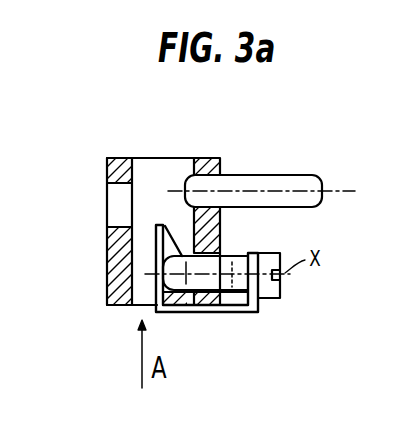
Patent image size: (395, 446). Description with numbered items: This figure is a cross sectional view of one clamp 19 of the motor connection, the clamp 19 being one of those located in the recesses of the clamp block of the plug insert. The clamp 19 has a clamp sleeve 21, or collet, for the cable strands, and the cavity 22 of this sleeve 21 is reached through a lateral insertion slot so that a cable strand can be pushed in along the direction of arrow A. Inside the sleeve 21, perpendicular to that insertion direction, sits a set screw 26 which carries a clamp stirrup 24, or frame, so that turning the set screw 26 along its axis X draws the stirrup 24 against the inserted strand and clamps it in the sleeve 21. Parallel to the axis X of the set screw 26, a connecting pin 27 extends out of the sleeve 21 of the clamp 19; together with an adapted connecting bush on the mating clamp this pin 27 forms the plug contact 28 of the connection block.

The clamp 19 is at (106, 319).
The clamp sleeve 21 is at (112, 172).
The cavity 22 is at (169, 173).
The clamp stirrup 24 is at (243, 317).
The set screw 26 is at (275, 301).
The connecting pin 27 is at (267, 180).
The plug contact 28 is at (316, 156).